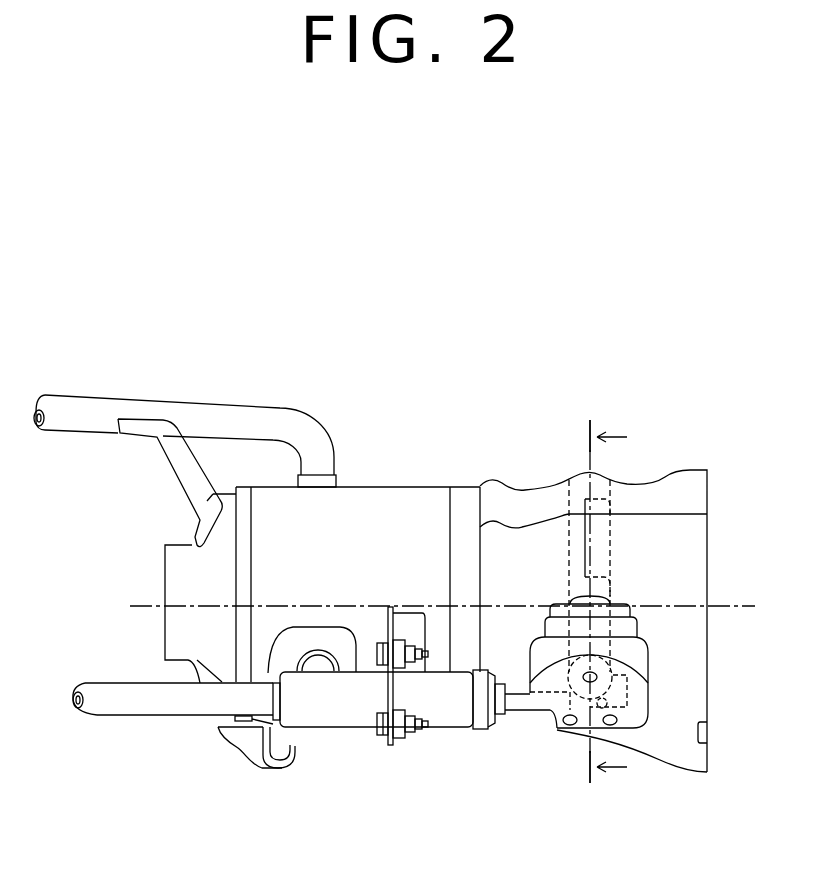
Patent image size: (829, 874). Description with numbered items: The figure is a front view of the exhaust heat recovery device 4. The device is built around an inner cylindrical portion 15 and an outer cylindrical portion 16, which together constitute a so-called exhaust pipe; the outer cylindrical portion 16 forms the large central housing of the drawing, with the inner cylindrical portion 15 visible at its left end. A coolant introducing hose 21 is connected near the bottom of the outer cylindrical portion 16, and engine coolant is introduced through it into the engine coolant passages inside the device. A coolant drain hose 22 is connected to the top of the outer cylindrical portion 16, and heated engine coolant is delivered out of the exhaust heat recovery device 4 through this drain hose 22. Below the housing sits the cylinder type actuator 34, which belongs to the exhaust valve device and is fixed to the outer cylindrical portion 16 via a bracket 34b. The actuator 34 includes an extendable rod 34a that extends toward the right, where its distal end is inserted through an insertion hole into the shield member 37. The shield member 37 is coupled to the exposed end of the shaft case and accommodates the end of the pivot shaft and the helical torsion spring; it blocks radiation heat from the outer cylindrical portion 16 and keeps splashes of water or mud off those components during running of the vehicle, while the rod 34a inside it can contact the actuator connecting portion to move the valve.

The exhaust heat recovery device 4 is at (534, 396).
The inner cylindrical portion 15 is at (165, 632).
The outer cylindrical portion 16 is at (413, 487).
The coolant introducing hose 21 is at (175, 707).
The coolant drain hose 22 is at (216, 413).
The cylinder type actuator 34 is at (453, 715).
The extendable rod 34a is at (522, 703).
The bracket 34b is at (387, 700).
The shield member 37 is at (648, 667).